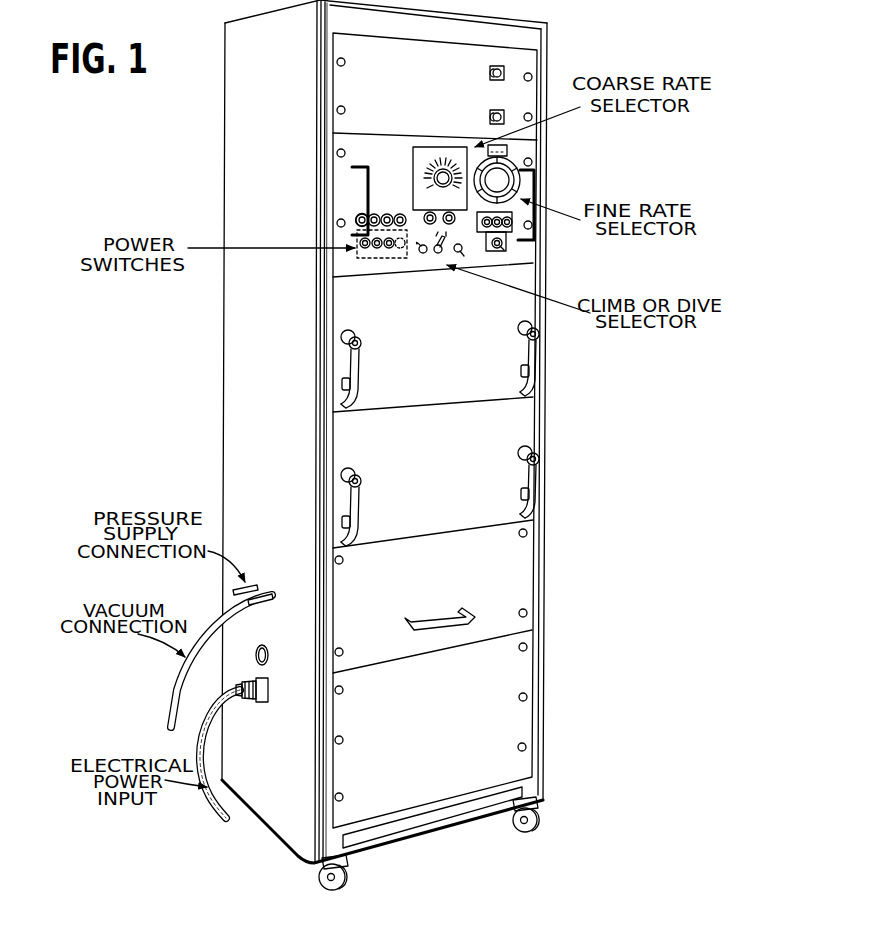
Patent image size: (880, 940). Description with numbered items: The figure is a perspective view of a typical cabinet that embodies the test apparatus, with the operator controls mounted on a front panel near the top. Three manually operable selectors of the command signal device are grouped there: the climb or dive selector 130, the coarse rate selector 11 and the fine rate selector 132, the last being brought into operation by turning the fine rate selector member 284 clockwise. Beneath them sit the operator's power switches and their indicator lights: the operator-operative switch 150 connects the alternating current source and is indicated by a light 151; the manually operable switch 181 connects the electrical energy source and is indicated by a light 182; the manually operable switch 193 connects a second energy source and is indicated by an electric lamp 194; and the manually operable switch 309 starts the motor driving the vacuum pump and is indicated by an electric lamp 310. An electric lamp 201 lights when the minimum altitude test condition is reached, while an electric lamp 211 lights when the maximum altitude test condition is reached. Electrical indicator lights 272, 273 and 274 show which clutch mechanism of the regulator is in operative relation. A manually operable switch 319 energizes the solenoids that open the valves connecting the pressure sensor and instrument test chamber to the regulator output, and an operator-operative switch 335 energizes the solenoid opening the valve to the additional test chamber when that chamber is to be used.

The coarse rate selector 11 is at (443, 170).
The fine rate selector 132 is at (506, 176).
The light 182 is at (357, 218).
The electric lamp 194 is at (357, 224).
The light 151 is at (370, 214).
The electric lamp 310 is at (398, 214).
The electric lamp 201 is at (427, 213).
The electric lamp 211 is at (452, 213).
The manually operable switch 309 is at (406, 262).
The manually operable switch 193 is at (366, 249).
The manually operable switch 181 is at (378, 250).
The operator-operative switch 150 is at (390, 250).
The operator-operative switch 335 is at (421, 252).
The climb or dive selector 130 is at (437, 254).
The manually operable switch 319 is at (458, 253).
The electrical indicator light 272 is at (486, 232).
The electrical indicator light 274 is at (512, 229).
The electrical indicator light 273 is at (507, 248).
The fine rate selector member 284 is at (501, 247).